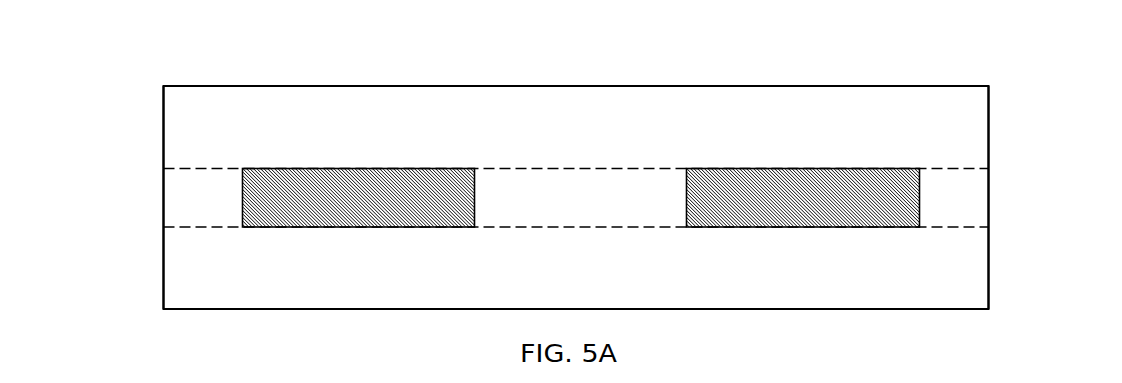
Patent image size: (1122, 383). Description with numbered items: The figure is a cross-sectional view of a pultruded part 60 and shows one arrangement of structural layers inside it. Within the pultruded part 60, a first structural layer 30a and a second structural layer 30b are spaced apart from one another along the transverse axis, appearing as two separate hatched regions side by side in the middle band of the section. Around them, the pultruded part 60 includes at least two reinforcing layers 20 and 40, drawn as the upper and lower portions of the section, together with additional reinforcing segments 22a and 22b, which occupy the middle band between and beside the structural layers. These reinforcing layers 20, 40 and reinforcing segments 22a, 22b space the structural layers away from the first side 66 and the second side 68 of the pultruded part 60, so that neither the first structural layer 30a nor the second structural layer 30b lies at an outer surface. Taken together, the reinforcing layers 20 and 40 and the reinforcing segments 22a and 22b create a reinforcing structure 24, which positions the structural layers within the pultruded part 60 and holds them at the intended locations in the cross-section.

The pultruded part 60 is at (312, 76).
The reinforcing structure 24 is at (409, 100).
The reinforcing layer 20 is at (188, 112).
The first side 66 is at (992, 138).
The reinforcing segment 22a is at (175, 200).
The reinforcing segment 22b is at (580, 190).
The second side 68 is at (163, 250).
The reinforcing layer 40 is at (970, 282).
The first structural layer 30a is at (337, 228).
The second structural layer 30b is at (792, 228).